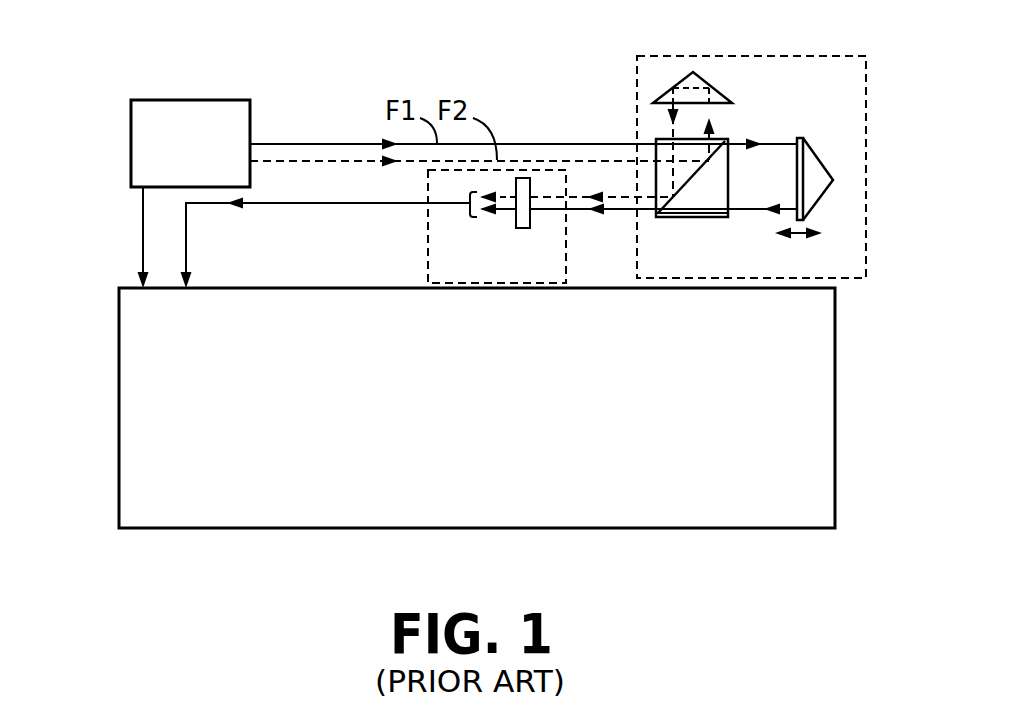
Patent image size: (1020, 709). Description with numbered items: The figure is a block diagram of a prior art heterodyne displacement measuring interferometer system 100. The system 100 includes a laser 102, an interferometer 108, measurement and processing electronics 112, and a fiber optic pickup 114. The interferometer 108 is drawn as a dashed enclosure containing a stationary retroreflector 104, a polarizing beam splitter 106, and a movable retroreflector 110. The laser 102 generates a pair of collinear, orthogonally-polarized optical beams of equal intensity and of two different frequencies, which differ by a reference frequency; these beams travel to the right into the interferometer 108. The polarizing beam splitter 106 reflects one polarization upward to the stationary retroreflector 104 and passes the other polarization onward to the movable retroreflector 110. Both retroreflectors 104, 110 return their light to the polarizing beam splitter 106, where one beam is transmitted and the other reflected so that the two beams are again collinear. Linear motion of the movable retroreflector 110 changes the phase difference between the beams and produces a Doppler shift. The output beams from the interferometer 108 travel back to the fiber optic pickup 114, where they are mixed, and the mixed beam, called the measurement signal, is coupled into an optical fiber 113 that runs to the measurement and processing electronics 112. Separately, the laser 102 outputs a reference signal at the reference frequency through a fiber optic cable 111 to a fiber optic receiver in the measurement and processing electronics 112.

The interferometer system 100 is at (124, 92).
The laser 102 is at (250, 117).
The stationary retroreflector 104 is at (665, 102).
The polarizing beam splitter 106 is at (657, 139).
The interferometer 108 is at (866, 98).
The movable retroreflector 110 is at (823, 197).
The fiber optic cable 111 is at (140, 208).
The measurement and processing electronics 112 is at (307, 288).
The optical fiber 113 is at (265, 203).
The fiber optic pickup 114 is at (428, 263).